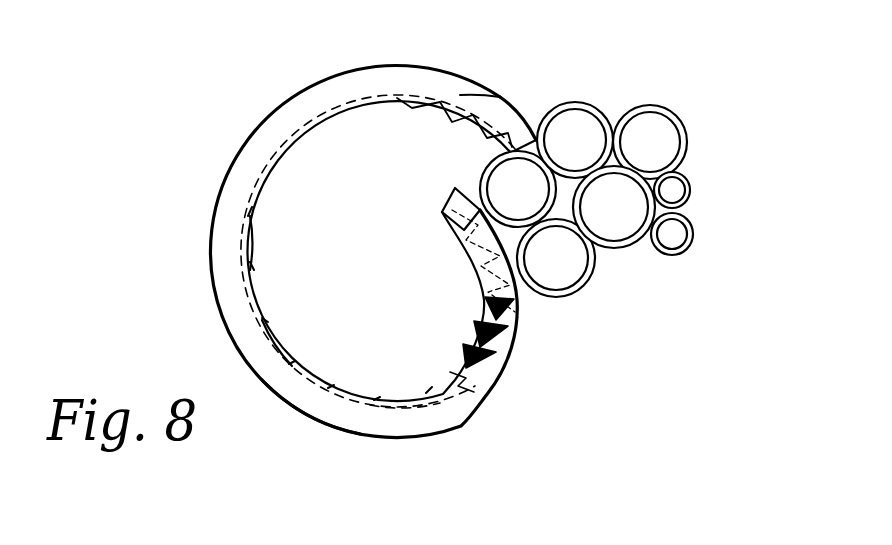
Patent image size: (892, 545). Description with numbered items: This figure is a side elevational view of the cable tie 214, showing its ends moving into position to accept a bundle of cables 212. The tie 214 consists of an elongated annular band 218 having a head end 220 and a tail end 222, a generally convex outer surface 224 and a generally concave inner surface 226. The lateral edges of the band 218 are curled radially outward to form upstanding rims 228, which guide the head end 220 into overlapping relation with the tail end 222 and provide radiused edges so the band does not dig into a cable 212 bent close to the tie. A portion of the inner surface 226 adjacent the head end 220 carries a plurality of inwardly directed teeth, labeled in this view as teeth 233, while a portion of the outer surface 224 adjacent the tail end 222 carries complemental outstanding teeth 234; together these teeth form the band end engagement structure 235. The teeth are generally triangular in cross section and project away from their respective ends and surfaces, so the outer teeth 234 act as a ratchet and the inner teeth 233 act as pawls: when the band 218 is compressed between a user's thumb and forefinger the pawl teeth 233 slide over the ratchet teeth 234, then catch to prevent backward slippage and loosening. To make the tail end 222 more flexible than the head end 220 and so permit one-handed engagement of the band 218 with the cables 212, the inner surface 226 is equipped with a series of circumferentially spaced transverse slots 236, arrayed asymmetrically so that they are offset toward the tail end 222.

The cable tie 214 is at (103, 97).
The elongated annular band 218 is at (207, 258).
The head end 220 is at (516, 118).
The tail end 222 is at (452, 189).
The outer surface 224 is at (411, 408).
The inner surface 226 is at (256, 190).
The rims 228 is at (312, 413).
The ratchet teeth 233 is at (440, 103).
The outstanding teeth 234 is at (516, 326).
The band end engagement structure 235 is at (459, 126).
The transverse slots 236 is at (258, 320).
The cables 212 is at (693, 231).